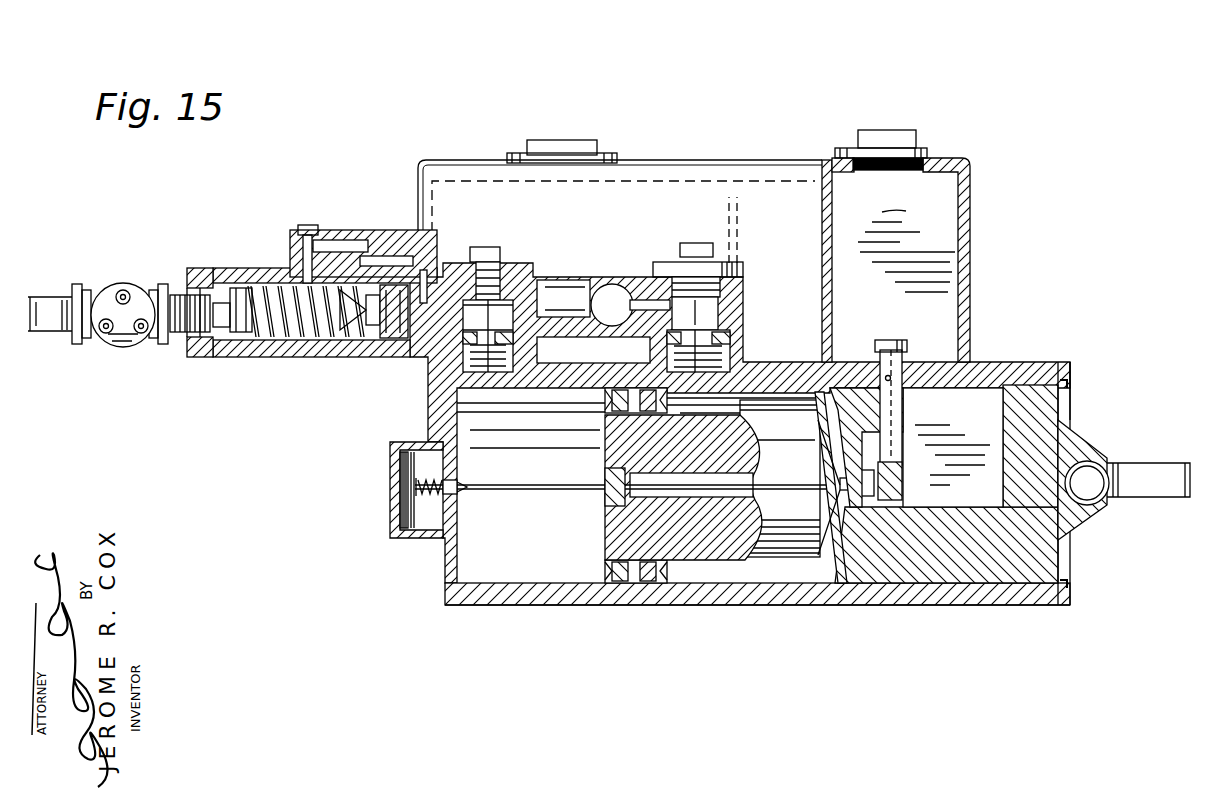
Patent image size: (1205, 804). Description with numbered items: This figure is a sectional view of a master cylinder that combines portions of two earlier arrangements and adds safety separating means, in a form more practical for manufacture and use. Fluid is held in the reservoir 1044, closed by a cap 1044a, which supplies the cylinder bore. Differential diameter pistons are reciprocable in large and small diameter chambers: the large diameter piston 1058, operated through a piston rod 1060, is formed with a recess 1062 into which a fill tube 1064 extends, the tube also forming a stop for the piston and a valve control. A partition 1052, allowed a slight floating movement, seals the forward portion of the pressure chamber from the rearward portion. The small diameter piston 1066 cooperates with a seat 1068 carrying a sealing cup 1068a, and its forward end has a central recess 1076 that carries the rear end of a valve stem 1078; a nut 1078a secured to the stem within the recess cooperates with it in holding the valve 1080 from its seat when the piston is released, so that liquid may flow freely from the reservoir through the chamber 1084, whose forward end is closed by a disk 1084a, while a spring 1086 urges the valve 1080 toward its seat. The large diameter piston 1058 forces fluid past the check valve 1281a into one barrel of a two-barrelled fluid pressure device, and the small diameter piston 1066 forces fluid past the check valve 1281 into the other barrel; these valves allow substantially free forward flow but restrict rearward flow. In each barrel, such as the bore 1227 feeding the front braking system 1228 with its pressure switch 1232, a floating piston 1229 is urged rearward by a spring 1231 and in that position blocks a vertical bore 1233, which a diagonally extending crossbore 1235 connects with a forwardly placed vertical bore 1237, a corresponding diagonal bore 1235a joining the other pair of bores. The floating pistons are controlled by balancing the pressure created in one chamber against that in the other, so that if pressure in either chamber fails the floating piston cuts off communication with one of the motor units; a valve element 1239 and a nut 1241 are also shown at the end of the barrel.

The reservoir 1044 is at (963, 222).
The cap 1044a is at (897, 146).
The partition 1052 is at (627, 582).
The large diameter piston 1058 is at (1017, 562).
The piston rod 1060 is at (1150, 488).
The recess 1062 is at (988, 415).
The fill tube 1064 is at (896, 398).
The small diameter piston 1066 is at (797, 562).
The seat 1068 is at (846, 550).
The sealing cup 1068a is at (833, 578).
The central recess 1076 is at (740, 478).
The valve stem 1078 is at (547, 489).
The nut 1078a is at (602, 504).
The valve 1080 is at (470, 487).
The chamber 1084 is at (413, 478).
The disk 1084a is at (398, 504).
The spring 1086 is at (440, 510).
The bore 1227 is at (303, 338).
The front braking system 1228 is at (57, 322).
The floating piston 1229 is at (410, 342).
The spring 1231 is at (270, 338).
The pressure switch 1232 is at (140, 258).
The vertical bore 1233 is at (296, 261).
The crossbore 1235 is at (420, 233).
The diagonal bore 1235a is at (342, 228).
The vertical bore 1237 is at (436, 262).
The valve 1239 is at (367, 332).
The nut 1241 is at (243, 268).
The check valve 1281 is at (497, 330).
The check valve 1281a is at (713, 333).